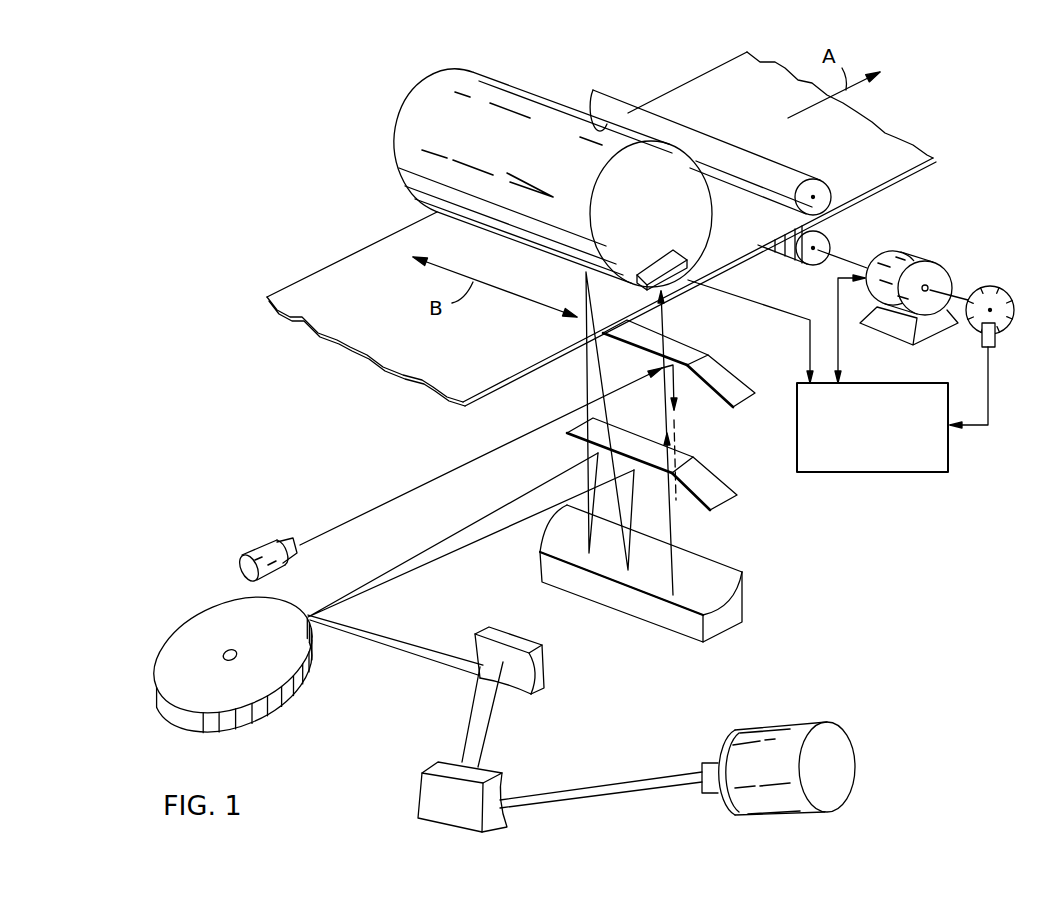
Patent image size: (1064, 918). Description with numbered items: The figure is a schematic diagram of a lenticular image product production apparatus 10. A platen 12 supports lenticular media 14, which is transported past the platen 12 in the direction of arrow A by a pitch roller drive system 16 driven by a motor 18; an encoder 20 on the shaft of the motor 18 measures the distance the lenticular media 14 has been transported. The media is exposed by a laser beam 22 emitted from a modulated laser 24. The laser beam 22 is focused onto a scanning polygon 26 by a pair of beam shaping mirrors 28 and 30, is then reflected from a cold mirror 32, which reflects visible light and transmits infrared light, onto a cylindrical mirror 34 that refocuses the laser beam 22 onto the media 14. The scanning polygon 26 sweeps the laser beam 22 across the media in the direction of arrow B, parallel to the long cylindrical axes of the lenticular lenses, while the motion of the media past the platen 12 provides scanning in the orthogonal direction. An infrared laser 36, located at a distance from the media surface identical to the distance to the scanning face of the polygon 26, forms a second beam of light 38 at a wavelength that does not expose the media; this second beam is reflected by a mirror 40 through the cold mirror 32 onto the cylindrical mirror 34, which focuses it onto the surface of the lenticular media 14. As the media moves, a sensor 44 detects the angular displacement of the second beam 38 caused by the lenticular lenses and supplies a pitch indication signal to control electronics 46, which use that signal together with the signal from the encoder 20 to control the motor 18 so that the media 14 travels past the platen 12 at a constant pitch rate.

The lenticular image product production apparatus 10 is at (310, 125).
The platen 12 is at (503, 98).
The lenticular media 14 is at (352, 263).
The pitch roller drive system 16 is at (828, 177).
The motor 18 is at (937, 262).
The encoder 20 is at (1008, 290).
The laser beam 22 is at (414, 640).
The modulated laser 24 is at (778, 735).
The scanning polygon 26 is at (233, 615).
The beam shaping mirror 28 is at (420, 778).
The beam shaping mirror 30 is at (548, 652).
The cold mirror 32 is at (705, 475).
The cylindrical mirror 34 is at (745, 598).
The infrared laser 36 is at (262, 545).
The second beam of light 38 is at (370, 508).
The mirror 40 is at (728, 372).
The sensor 44 is at (672, 282).
The control electronics 46 is at (952, 455).